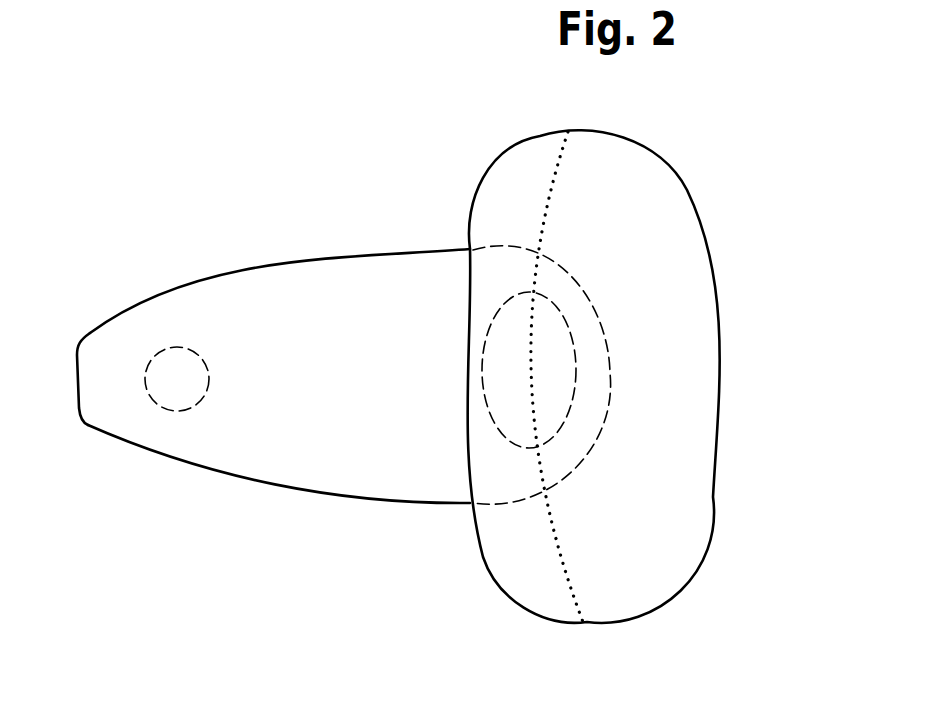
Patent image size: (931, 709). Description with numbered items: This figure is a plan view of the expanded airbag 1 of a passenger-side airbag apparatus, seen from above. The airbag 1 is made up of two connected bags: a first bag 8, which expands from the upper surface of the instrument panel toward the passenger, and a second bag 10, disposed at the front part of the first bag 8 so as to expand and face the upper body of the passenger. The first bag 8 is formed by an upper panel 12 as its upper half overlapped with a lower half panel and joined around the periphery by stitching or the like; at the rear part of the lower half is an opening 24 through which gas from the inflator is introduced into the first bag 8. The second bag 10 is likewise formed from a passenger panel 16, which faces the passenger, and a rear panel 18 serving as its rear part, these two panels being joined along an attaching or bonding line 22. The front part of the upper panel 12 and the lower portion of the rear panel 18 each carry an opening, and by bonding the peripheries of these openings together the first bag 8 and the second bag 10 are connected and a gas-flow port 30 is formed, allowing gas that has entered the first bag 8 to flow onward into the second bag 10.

The airbag 1 is at (488, 105).
The first bag 8 is at (266, 248).
The second bag 10 is at (462, 201).
The upper panel 12 is at (327, 450).
The passenger panel 16 is at (658, 556).
The rear panel 18 is at (518, 558).
The attaching or bonding line 22 is at (548, 227).
The opening 24 is at (200, 404).
The gas-flow port 30 is at (556, 365).